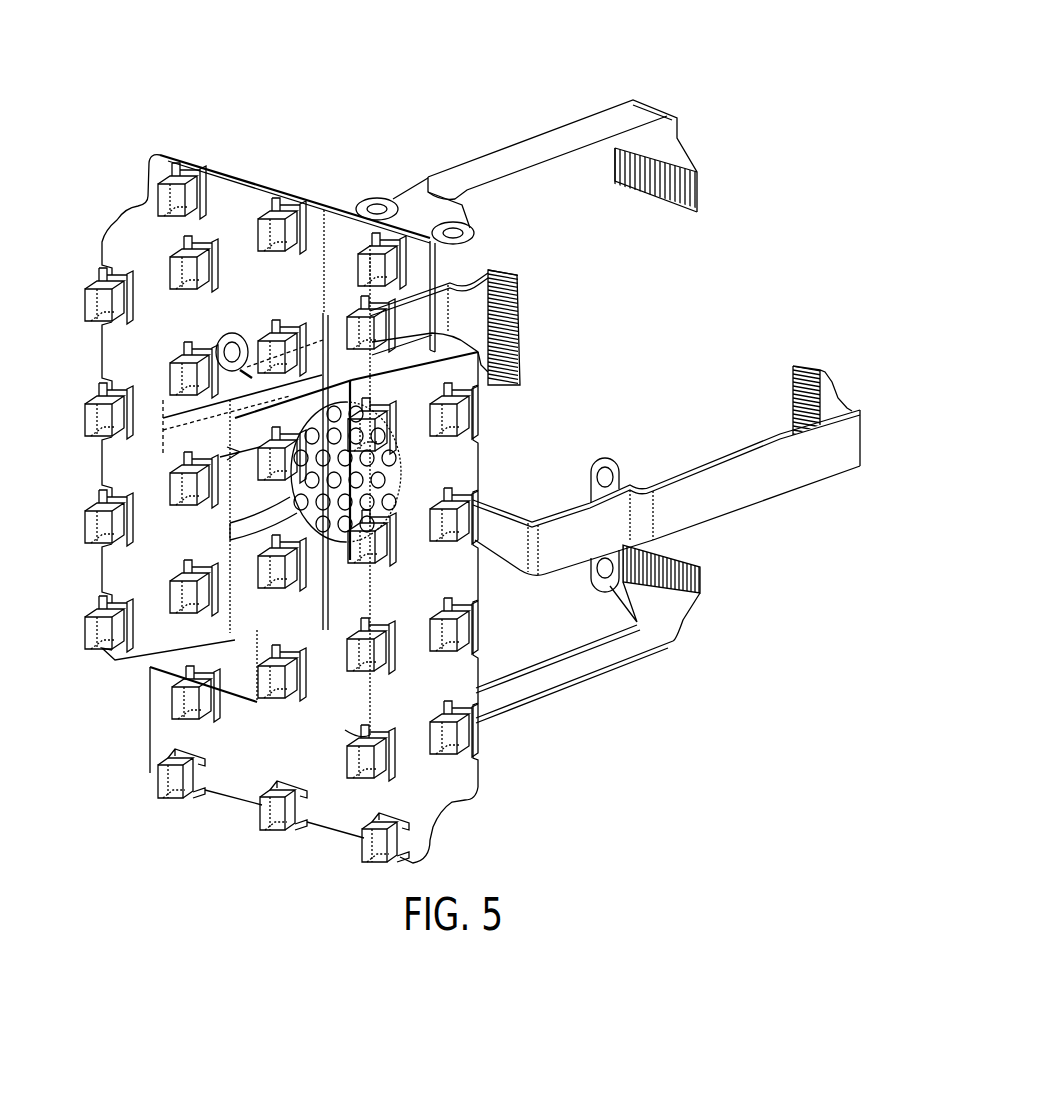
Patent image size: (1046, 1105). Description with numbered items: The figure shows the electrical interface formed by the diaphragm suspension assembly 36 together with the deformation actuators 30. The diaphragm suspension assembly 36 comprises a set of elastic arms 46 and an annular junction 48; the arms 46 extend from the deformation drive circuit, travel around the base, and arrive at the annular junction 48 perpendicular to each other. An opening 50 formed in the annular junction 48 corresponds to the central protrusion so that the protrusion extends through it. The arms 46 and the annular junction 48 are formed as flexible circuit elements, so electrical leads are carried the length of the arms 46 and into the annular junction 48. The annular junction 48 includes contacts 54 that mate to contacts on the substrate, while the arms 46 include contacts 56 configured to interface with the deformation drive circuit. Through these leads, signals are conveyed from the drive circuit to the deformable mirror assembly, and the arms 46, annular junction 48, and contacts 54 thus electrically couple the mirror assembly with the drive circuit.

The diaphragm suspension assembly 36 is at (656, 58).
The deformation actuators 30 is at (97, 621).
The elastic arms 46 is at (510, 158).
The contacts 56 is at (675, 198).
The annular junction 48 is at (232, 540).
The opening 50 is at (345, 487).
The contacts 54 is at (402, 497).